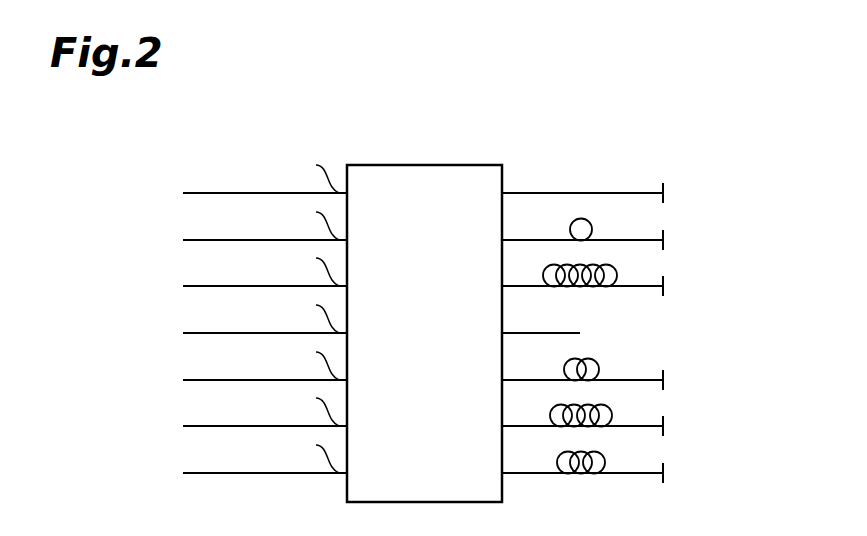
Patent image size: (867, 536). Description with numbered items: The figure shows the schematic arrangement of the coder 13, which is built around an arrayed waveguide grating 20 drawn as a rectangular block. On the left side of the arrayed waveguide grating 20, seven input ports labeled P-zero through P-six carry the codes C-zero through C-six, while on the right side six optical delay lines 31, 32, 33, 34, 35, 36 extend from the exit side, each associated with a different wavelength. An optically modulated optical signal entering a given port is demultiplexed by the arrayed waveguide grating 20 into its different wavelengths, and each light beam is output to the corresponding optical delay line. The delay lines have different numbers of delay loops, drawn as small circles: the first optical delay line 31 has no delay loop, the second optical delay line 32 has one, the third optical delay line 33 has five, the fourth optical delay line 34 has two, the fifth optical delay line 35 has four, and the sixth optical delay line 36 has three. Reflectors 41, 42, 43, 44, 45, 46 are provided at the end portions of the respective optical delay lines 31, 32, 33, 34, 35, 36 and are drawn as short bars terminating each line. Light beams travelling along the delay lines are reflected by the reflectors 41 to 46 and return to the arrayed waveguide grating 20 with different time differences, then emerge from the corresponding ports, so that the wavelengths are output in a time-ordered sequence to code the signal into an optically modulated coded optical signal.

The coder 13 is at (545, 73).
The arrayed waveguide grating 20 is at (450, 165).
The first optical delay line 31 is at (623, 193).
The second optical delay line 32 is at (623, 240).
The third optical delay line 33 is at (623, 286).
The fourth optical delay line 34 is at (623, 380).
The fifth optical delay line 35 is at (623, 426).
The sixth optical delay line 36 is at (623, 473).
The reflector 41 is at (665, 193).
The reflector 42 is at (665, 240).
The reflector 43 is at (665, 286).
The reflector 44 is at (665, 380).
The reflector 45 is at (665, 426).
The reflector 46 is at (665, 473).